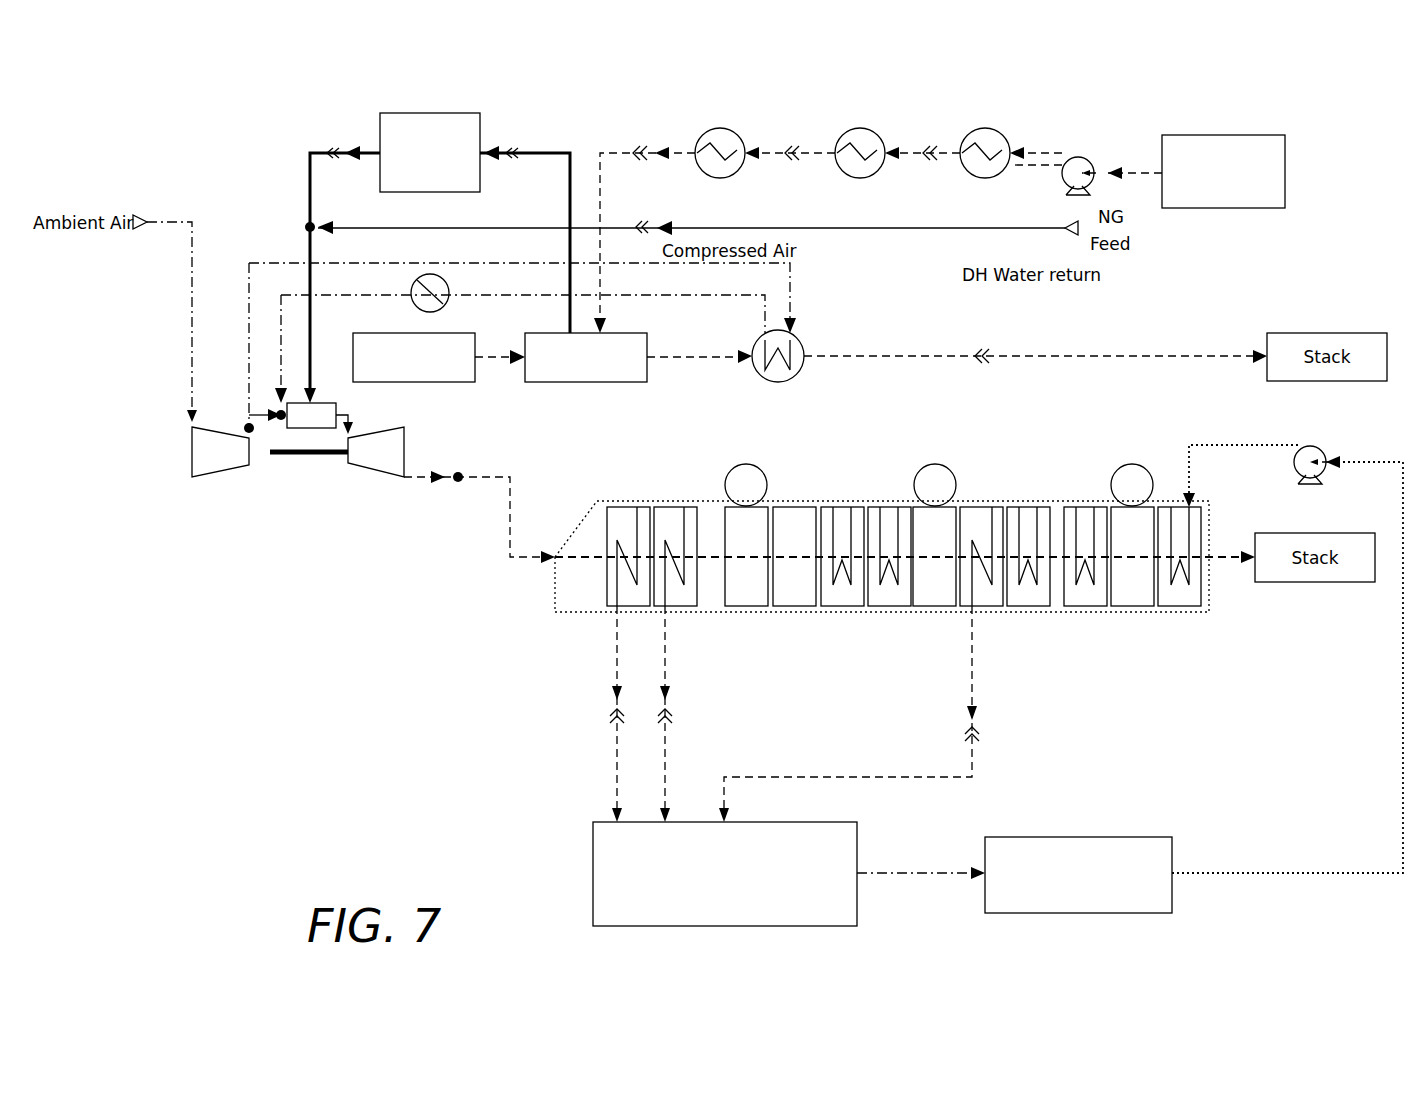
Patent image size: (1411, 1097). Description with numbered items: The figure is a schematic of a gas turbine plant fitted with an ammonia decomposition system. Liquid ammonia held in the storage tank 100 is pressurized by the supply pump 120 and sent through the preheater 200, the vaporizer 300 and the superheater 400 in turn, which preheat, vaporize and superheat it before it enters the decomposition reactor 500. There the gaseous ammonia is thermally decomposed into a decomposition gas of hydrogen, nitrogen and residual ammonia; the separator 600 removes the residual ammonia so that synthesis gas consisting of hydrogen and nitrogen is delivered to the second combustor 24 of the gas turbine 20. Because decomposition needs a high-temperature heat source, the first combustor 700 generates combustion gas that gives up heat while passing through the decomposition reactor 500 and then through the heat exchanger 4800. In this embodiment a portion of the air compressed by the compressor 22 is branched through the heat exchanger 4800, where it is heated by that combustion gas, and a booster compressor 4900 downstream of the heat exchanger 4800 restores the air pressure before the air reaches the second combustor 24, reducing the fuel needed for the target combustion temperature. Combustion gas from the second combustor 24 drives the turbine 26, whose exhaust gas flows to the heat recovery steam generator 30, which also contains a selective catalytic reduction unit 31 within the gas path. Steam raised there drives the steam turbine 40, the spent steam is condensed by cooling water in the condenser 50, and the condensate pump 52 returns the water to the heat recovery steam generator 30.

The storage tank 100 is at (1220, 135).
The supply pump 120 is at (1078, 157).
The preheater 200 is at (985, 128).
The vaporizer 300 is at (860, 128).
The superheater 400 is at (720, 128).
The decomposition reactor 500 is at (585, 382).
The separator 600 is at (428, 113).
The first combustor 700 is at (450, 382).
The heat exchanger 4800 is at (790, 381).
The booster compressor 4900 is at (418, 305).
The gas turbine 20 is at (298, 484).
The compressor 22 is at (222, 456).
The second combustor 24 is at (305, 420).
The turbine 26 is at (376, 474).
The heat recovery steam generator 30 is at (905, 595).
The selective catalytic reduction unit 31 is at (793, 507).
The steam turbine 40 is at (593, 873).
The condenser 50 is at (1078, 837).
The condensate pump 52 is at (1305, 446).